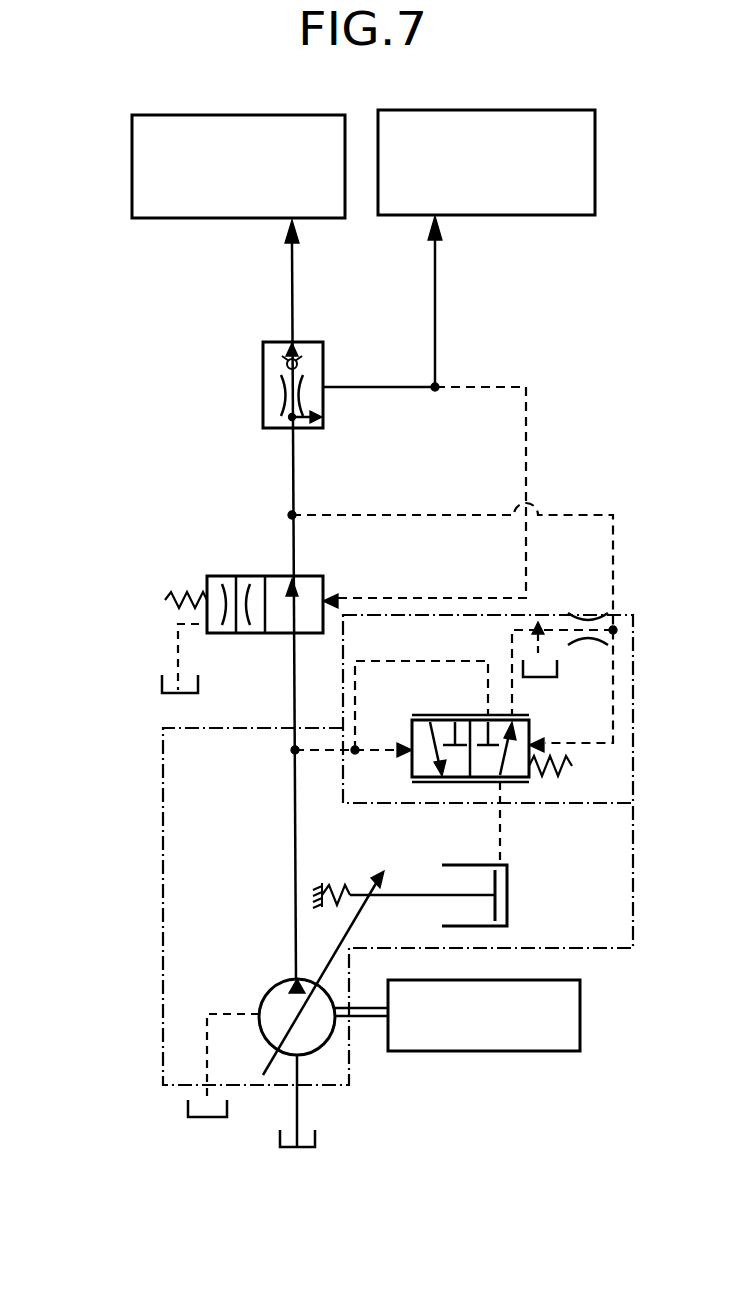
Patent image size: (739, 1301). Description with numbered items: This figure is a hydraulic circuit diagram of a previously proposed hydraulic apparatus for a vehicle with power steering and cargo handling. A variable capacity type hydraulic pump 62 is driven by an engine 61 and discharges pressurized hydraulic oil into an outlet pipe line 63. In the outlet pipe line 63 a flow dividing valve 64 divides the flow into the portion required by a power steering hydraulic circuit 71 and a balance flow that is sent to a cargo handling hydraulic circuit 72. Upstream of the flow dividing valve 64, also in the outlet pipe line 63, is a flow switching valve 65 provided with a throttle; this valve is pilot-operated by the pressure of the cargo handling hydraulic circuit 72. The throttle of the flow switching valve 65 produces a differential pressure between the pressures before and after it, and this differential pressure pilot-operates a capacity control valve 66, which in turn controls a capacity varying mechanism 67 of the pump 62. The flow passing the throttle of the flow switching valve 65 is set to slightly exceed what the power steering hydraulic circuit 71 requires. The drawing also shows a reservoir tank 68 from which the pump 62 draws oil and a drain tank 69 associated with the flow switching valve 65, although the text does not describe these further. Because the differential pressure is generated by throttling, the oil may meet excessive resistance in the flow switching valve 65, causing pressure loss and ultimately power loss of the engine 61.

The engine 61 is at (582, 1012).
The variable capacity type hydraulic pump 62 is at (163, 862).
The outlet pipe line 63 is at (295, 683).
The flow dividing valve 64 is at (263, 390).
The flow switching valve 65 is at (256, 576).
The capacity control valve 66 is at (633, 688).
The capacity varying mechanism 67 is at (527, 898).
The tank 68 is at (190, 1095).
The drain tank 69 is at (176, 647).
The power steering hydraulic circuit 71 is at (132, 183).
The cargo handling hydraulic circuit 72 is at (595, 170).